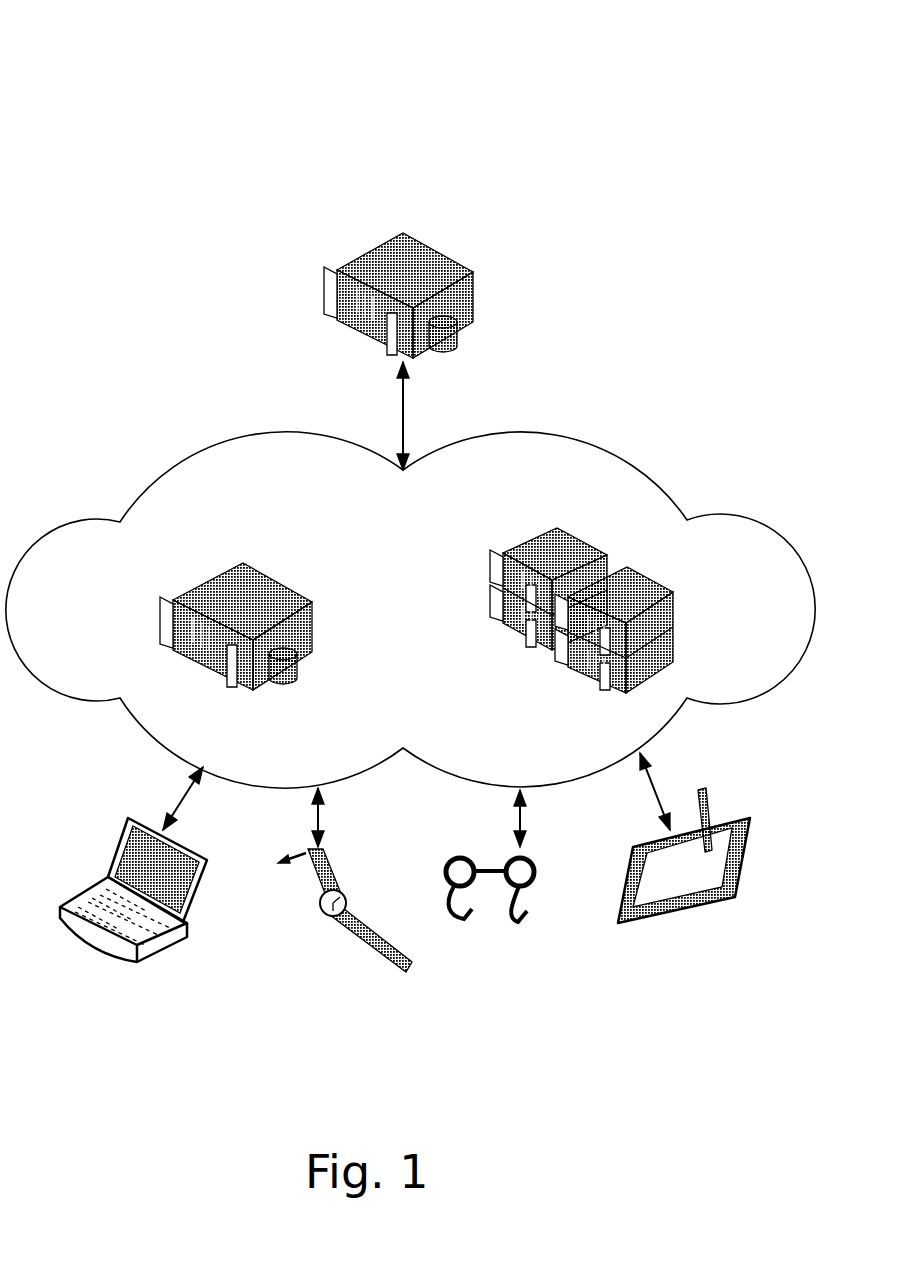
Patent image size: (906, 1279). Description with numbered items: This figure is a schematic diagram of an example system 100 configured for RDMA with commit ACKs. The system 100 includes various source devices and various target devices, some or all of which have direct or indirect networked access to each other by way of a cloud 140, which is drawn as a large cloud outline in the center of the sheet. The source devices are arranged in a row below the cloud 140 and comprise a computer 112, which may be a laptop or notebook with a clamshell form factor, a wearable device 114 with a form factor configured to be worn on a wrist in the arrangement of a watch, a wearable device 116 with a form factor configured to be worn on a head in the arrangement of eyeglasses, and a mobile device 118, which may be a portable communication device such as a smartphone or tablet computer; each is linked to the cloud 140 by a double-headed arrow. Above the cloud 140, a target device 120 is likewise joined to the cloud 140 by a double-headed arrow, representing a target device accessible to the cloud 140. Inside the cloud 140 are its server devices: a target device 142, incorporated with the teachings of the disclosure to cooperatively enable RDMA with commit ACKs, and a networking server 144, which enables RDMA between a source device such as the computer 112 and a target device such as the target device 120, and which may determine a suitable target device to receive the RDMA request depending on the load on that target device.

The system 100 is at (178, 48).
The computer 112 is at (119, 848).
The wearable device 114 is at (323, 928).
The wearable device 116 is at (544, 862).
The mobile device 118 is at (737, 813).
The target device 120 is at (323, 282).
The cloud 140 is at (429, 567).
The target device 142 is at (163, 630).
The networking server 144 is at (530, 637).